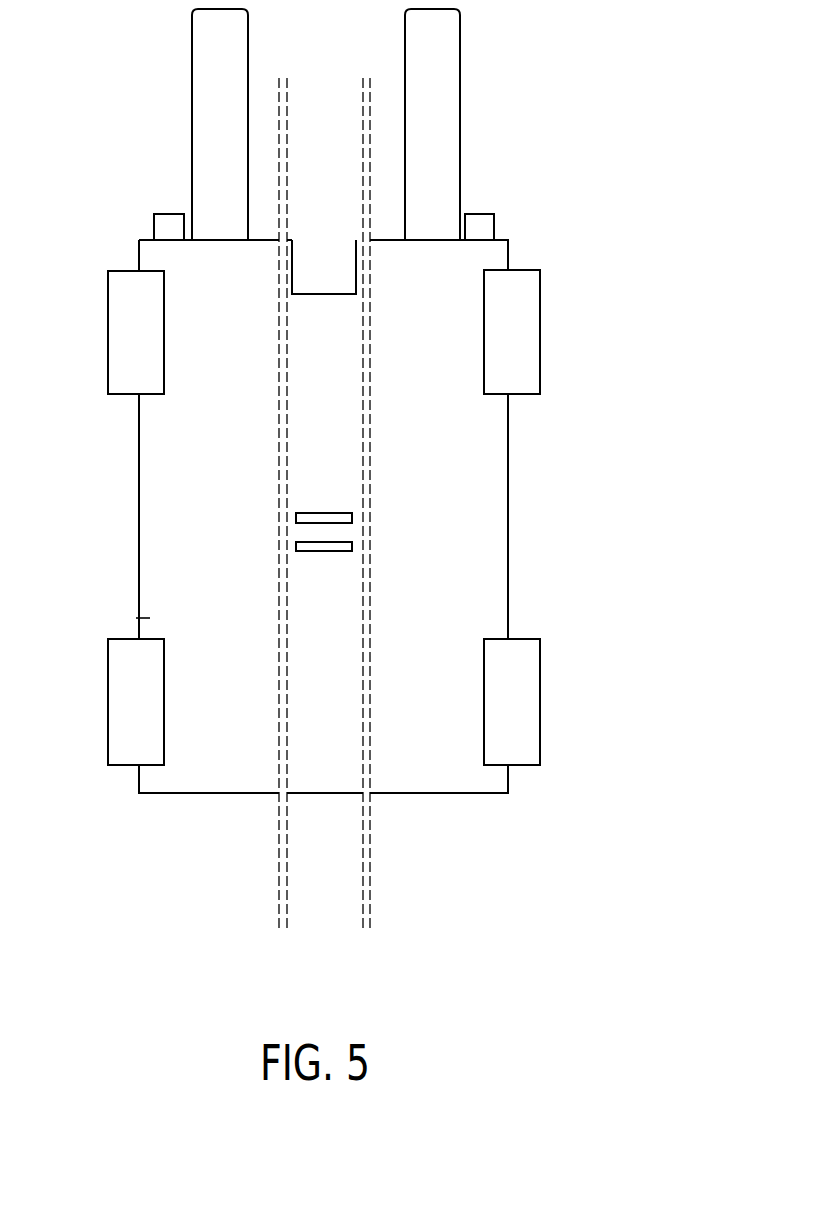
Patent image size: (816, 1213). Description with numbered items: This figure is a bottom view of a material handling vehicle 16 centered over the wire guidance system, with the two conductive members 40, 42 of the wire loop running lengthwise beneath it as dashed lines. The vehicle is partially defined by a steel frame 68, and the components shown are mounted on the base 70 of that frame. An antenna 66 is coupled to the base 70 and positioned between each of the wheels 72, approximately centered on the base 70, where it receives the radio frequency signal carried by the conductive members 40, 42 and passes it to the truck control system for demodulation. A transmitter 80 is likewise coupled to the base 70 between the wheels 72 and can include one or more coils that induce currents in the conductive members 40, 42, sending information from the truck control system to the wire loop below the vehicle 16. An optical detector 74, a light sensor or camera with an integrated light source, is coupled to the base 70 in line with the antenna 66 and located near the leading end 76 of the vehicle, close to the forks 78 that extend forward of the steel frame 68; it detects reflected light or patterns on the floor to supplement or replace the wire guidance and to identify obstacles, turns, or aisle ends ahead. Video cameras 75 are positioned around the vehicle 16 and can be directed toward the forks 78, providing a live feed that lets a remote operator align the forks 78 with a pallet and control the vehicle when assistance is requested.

The material handling vehicle 16 is at (574, 110).
The conductive member 40 is at (278, 505).
The conductive member 42 is at (371, 504).
The antenna 66 is at (348, 549).
The steel frame 68 is at (138, 498).
The base 70 is at (150, 618).
The wheels 72 is at (128, 293).
The optical detector 74 is at (308, 295).
The video cameras 75 is at (173, 222).
The leading end 76 is at (500, 238).
The forks 78 is at (210, 133).
The transmitter 80 is at (297, 515).